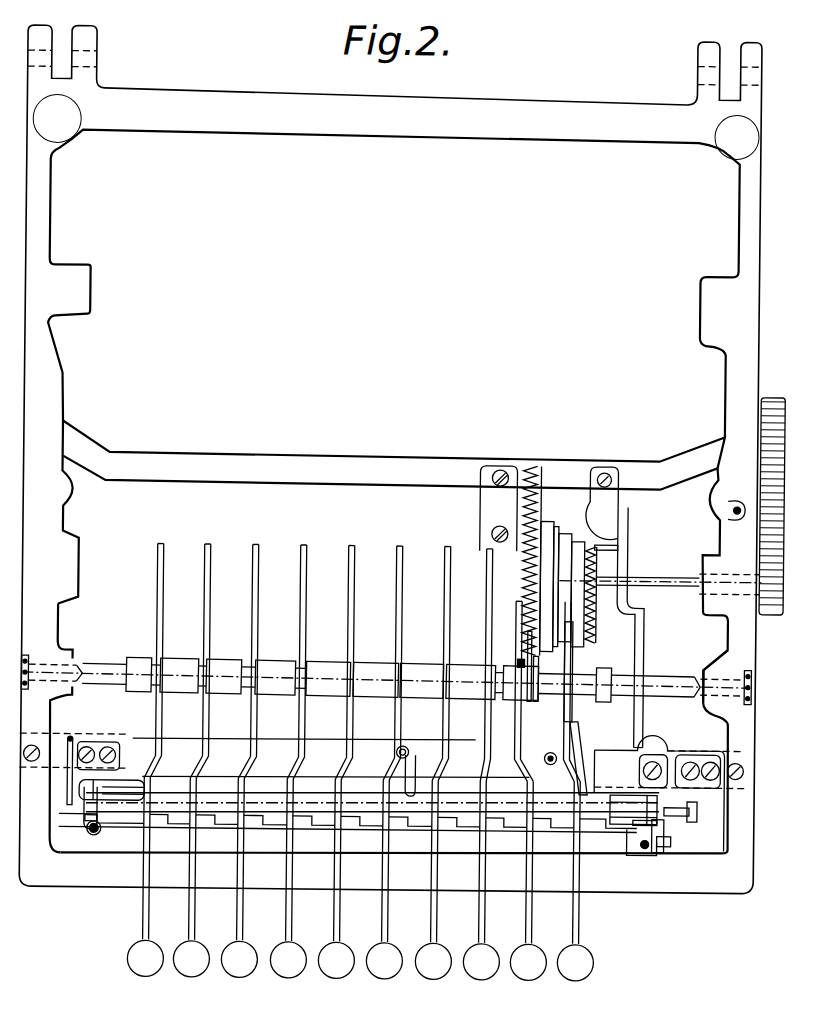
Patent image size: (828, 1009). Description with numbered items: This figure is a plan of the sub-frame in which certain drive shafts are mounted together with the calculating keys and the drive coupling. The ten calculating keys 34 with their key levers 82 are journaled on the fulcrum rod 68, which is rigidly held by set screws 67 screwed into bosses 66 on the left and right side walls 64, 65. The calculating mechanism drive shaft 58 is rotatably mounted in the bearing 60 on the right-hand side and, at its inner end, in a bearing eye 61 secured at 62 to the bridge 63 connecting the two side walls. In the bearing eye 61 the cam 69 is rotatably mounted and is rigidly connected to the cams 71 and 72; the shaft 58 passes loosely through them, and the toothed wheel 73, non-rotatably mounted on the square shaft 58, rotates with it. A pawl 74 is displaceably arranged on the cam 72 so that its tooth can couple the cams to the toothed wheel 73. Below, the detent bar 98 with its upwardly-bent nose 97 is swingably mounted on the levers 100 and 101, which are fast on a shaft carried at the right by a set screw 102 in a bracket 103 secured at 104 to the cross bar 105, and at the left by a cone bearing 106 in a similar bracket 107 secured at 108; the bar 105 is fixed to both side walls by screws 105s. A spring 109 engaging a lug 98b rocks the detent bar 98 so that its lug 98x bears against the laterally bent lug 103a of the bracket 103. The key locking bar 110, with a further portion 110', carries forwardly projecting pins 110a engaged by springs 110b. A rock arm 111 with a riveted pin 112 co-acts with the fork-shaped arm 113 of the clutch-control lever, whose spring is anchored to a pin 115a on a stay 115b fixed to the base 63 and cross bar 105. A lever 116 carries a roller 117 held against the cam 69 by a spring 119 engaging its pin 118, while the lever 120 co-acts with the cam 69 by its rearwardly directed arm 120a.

The calculating keys 34 is at (281, 975).
The calculating mechanism drive shaft 58 is at (660, 580).
The bearing 60 is at (727, 562).
The bearing eye 61 is at (480, 516).
The securing means of bearing 62 is at (498, 525).
The bridge 63 is at (290, 467).
The left-hand side wall 64 is at (48, 552).
The right-hand side wall 65 is at (728, 445).
The bosses 66 is at (66, 646).
The set screws 67 is at (52, 682).
The fulcrum rod 68 is at (112, 654).
The cam 69 is at (546, 520).
The cam 71 is at (556, 522).
The cam 72 is at (563, 532).
The toothed wheel 73 is at (592, 556).
The pawl 74 is at (578, 545).
The calculating key lever 82 is at (240, 902).
The upwardly-bent nose 97 is at (184, 823).
The detent bar 98 is at (312, 818).
The lug 98b is at (412, 766).
The lug 98x is at (641, 856).
The lever 100 is at (93, 835).
The lever 101 is at (668, 830).
The set screw 102 is at (697, 816).
The bracket 103 is at (685, 808).
The laterally bent lug 103a is at (670, 842).
The securing means of bracket 104 is at (713, 759).
The cross bar 105 is at (632, 762).
The screws 105s is at (42, 753).
The cone bearing 106 is at (92, 795).
The bracket 107 is at (69, 782).
The securing means of left bracket 108 is at (112, 750).
The spring 109 is at (399, 751).
The key locking bar 110 is at (369, 778).
The rail end plate 110' is at (615, 826).
The forwardly projecting pins 110a is at (100, 822).
The springs 110b is at (98, 838).
The rock arm 111 is at (632, 771).
The pin 112 is at (582, 776).
The arm 113 is at (575, 731).
The pin 115a is at (616, 545).
The stay 115b is at (638, 674).
The lever 116 is at (520, 661).
The roller 117 is at (528, 655).
The pin 118 is at (517, 663).
The spring 119 is at (531, 465).
The lever 120 is at (568, 750).
The rearwardly directed arm 120a is at (505, 691).